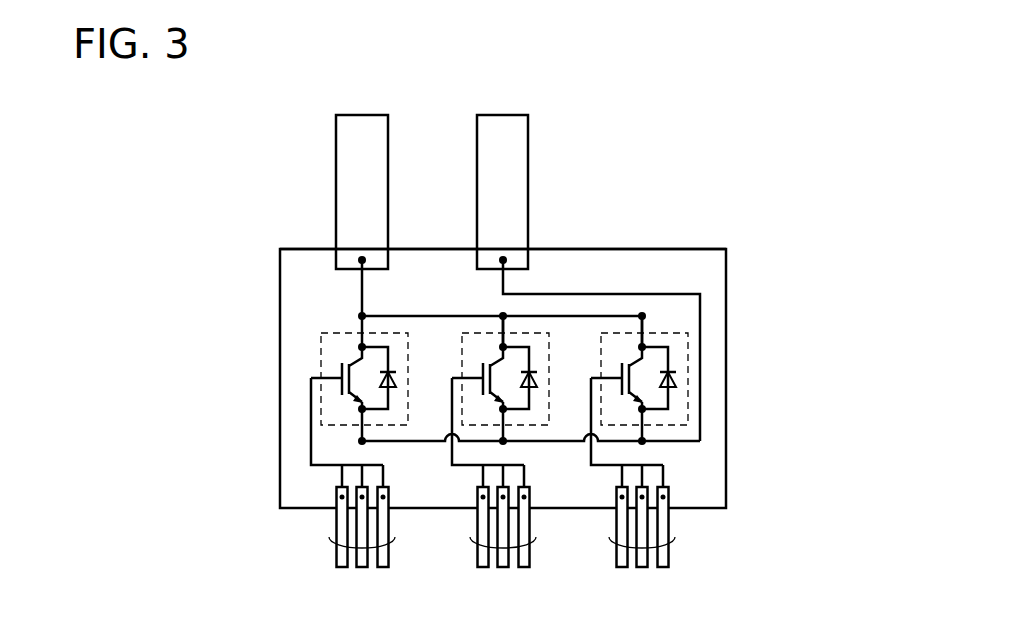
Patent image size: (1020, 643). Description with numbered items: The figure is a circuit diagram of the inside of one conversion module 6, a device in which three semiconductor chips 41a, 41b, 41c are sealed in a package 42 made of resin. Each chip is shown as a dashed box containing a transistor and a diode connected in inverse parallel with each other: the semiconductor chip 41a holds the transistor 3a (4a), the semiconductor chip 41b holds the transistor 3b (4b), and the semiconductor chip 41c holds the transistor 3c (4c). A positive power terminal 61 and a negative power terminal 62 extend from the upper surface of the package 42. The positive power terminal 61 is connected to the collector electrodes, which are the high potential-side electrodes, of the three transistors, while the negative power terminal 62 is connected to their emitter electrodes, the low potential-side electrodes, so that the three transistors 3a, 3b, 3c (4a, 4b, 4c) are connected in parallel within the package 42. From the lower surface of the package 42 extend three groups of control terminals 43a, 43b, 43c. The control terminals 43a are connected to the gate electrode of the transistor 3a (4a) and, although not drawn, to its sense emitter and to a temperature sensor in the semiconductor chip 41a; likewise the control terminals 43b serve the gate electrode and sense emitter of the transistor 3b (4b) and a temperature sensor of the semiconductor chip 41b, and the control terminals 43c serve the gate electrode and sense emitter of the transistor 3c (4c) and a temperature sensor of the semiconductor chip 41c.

The conversion module 6 is at (281, 221).
The positive power terminal 61 is at (366, 122).
The negative power terminal 62 is at (507, 122).
The semiconductor chip 41a is at (333, 332).
The semiconductor chip 41b is at (475, 333).
The semiconductor chip 41c is at (689, 353).
The transistor 3a is at (341, 368).
The transistor 3b is at (481, 372).
The transistor 3c is at (620, 372).
The transistor 4a is at (300, 378).
The transistor 4b is at (464, 301).
The transistor 4c is at (623, 301).
The package 42 is at (703, 256).
The control terminals 43a is at (330, 540).
The control terminals 43b is at (471, 540).
The control terminals 43c is at (610, 540).